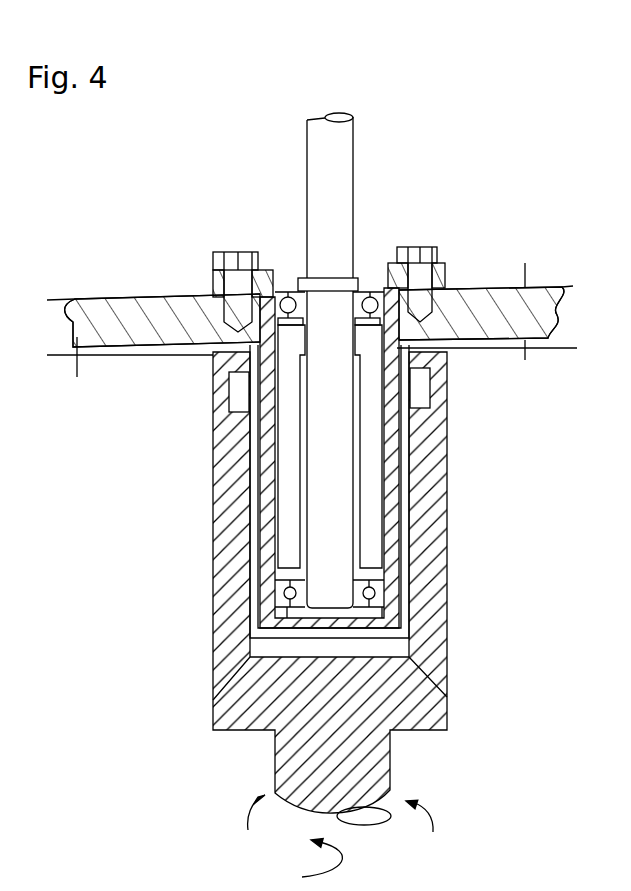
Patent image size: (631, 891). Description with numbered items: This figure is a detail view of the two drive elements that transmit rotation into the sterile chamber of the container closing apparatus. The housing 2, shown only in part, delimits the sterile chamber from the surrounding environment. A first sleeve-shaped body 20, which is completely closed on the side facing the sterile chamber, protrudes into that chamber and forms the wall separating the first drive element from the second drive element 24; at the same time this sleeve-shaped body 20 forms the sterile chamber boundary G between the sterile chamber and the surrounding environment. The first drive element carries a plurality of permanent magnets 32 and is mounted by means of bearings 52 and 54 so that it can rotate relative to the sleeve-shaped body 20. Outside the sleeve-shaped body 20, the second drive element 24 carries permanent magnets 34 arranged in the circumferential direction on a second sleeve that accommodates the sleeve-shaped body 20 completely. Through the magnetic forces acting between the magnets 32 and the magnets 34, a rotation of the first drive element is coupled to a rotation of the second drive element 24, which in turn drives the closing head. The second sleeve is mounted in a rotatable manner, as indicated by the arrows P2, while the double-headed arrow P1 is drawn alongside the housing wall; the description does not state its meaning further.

The housing 2 is at (155, 315).
The sleeve-shaped body 20 is at (270, 458).
The second drive element 24 is at (489, 559).
The permanent magnets 32 is at (365, 487).
The permanent magnets 34 is at (423, 388).
The bearing 52 is at (290, 292).
The bearing 54 is at (375, 593).
The sterile chamber boundary G is at (128, 355).
The axial displacement direction P1 is at (117, 620).
The arrows P2 is at (298, 96).